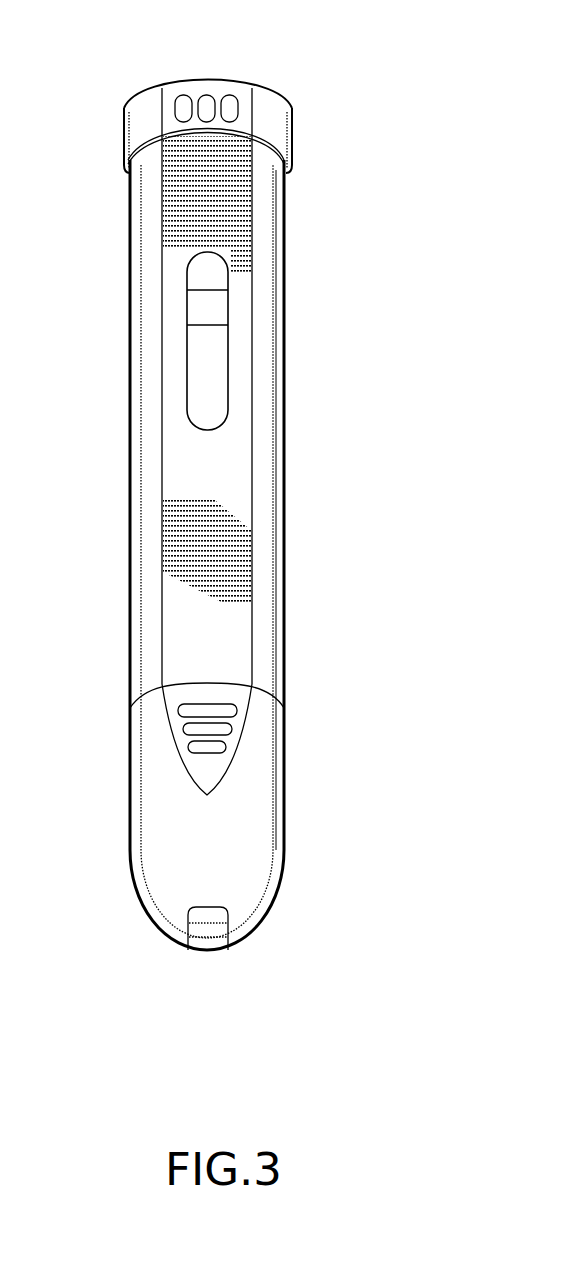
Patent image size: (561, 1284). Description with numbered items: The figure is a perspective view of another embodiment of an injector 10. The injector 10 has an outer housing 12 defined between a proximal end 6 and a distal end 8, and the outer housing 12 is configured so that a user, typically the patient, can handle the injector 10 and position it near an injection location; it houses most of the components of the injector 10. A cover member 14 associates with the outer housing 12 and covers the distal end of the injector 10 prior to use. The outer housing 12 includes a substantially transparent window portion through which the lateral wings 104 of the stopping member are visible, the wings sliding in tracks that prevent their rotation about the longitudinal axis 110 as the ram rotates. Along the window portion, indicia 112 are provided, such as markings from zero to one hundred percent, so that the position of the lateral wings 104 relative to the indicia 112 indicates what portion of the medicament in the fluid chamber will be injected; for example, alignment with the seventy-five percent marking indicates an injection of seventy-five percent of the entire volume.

The proximal end 6 is at (287, 90).
The distal end 8 is at (248, 960).
The injector 10 is at (370, 175).
The outer housing 12 is at (270, 243).
The cover member 14 is at (153, 763).
The lateral wings 104 is at (219, 316).
The longitudinal axis 110 is at (240, 385).
The indicia 112 is at (198, 390).